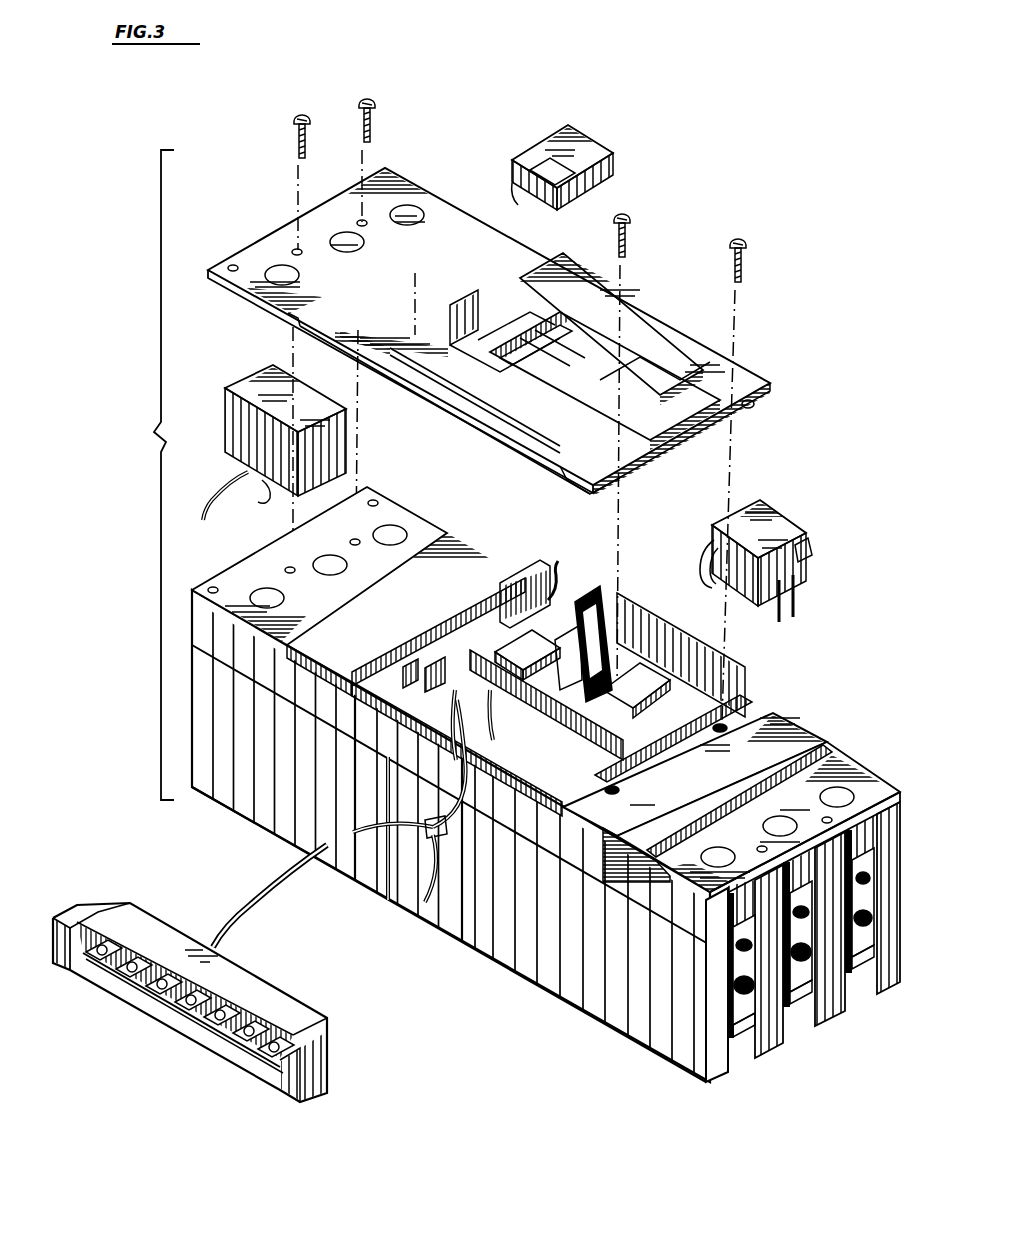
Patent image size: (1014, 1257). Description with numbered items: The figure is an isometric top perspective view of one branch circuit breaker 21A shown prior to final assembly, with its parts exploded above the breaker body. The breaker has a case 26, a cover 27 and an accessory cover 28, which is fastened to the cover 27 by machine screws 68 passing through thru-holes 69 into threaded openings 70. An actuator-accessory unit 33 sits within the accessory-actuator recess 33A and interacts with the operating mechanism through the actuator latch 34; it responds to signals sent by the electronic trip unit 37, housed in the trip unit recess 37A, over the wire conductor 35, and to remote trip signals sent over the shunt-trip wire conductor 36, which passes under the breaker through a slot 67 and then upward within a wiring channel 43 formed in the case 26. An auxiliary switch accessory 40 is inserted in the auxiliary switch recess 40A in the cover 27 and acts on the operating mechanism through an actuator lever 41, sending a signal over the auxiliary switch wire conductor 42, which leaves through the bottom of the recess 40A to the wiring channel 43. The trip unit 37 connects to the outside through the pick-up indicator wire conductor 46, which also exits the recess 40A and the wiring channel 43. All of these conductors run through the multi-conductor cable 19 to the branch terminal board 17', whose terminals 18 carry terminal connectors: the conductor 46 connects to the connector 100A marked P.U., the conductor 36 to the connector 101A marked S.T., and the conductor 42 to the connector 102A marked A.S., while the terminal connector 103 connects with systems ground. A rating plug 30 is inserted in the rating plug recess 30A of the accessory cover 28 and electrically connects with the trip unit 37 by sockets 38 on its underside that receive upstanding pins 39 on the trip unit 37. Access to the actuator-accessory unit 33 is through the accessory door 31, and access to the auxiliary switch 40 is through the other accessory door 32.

The branch circuit breaker 21A is at (134, 458).
The branch terminal board 17' is at (359, 1096).
The terminals 18 is at (177, 1002).
The multi-conductor cable 19 is at (264, 900).
The case 26 is at (645, 1045).
The cover 27 is at (546, 788).
The accessory cover 28 is at (513, 332).
The rating plug 30 is at (615, 158).
The rating plug recess 30A is at (456, 318).
The accessory door 31 is at (672, 358).
The other accessory door 32 is at (544, 409).
The actuator-accessory unit 33 is at (795, 520).
The accessory-actuator recess 33A is at (640, 640).
The actuator latch 34 is at (712, 590).
The wire conductor 35 is at (774, 614).
The shunt-trip wire conductor 36 is at (802, 604).
The electronic trip unit 37 is at (476, 654).
The trip unit recess 37A is at (508, 583).
The sockets 38 is at (510, 202).
The upstanding pins 39 is at (440, 633).
The auxiliary switch accessory 40 is at (352, 441).
The auxiliary switch recess 40A is at (530, 722).
The actuator lever 41 is at (262, 498).
The auxiliary switch wire conductor 42 is at (210, 492).
The wiring channel 43 is at (450, 850).
The pick-up indicator wire conductor 46 is at (440, 722).
The slot 67 is at (435, 905).
The machine screws 68 is at (748, 262).
The thru-holes 69 is at (750, 410).
The threaded openings 70 is at (745, 705).
The terminal connector "P.U." 100A is at (104, 970).
The terminal connector "S.T." 101A is at (145, 995).
The terminal connector "A.S." 102A is at (182, 1010).
The terminal connector 103 is at (215, 1030).